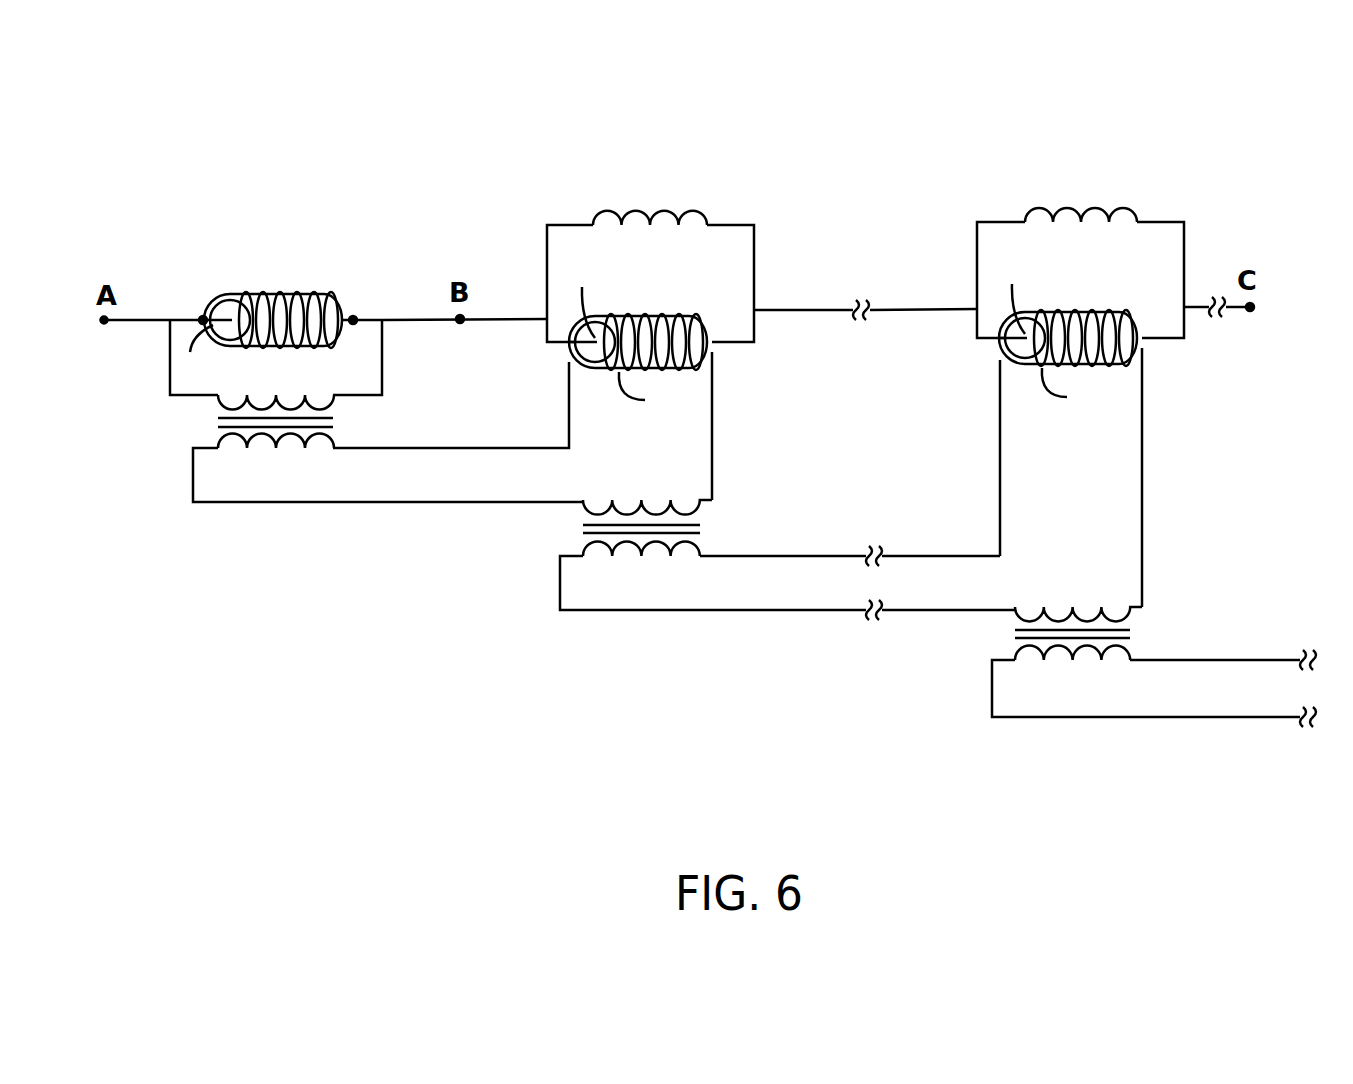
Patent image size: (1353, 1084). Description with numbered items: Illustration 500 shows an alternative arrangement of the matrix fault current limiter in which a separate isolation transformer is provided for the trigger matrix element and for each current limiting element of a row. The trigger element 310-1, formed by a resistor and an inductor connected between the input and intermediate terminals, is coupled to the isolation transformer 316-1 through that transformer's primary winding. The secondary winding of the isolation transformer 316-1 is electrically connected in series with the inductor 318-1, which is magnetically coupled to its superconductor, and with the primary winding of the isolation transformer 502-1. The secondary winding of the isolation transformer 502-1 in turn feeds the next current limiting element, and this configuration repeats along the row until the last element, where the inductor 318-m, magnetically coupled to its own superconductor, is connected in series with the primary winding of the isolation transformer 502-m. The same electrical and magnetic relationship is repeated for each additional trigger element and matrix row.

The illustration 500 is at (270, 139).
The trigger element 310-1 is at (140, 405).
The isolation transformer 316-1 is at (337, 422).
The inductor 318-1 is at (690, 368).
The inductor 318-m is at (1120, 364).
The isolation transformer 502-1 is at (703, 528).
The isolation transformer 502-m is at (1133, 633).